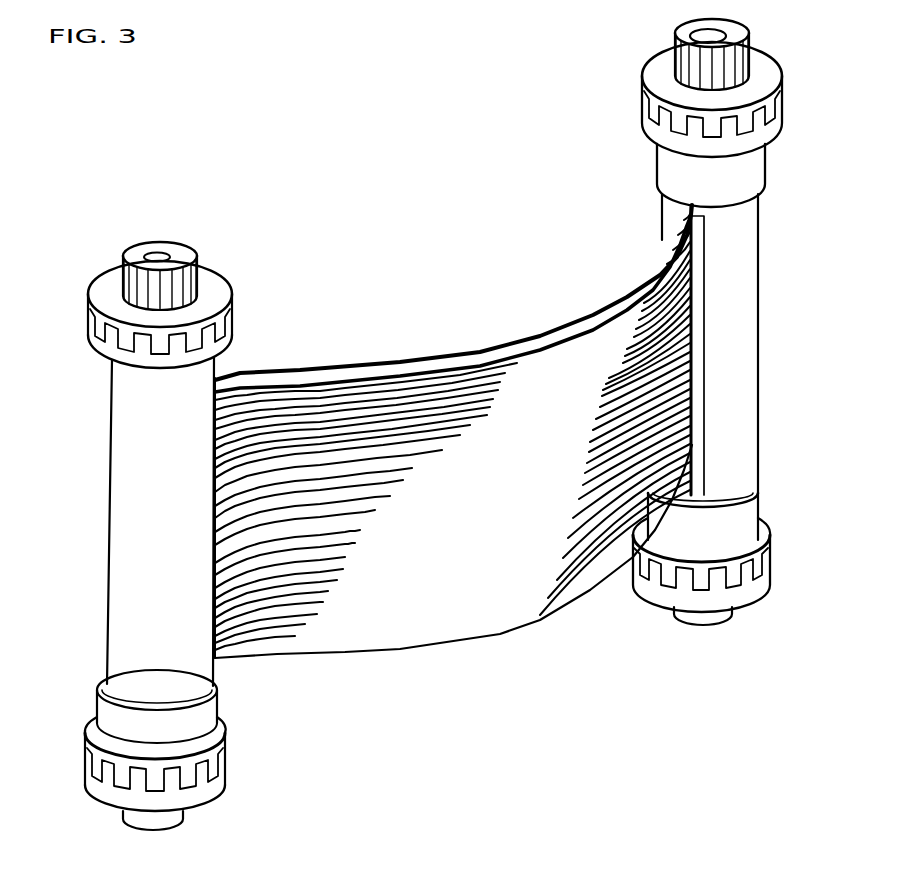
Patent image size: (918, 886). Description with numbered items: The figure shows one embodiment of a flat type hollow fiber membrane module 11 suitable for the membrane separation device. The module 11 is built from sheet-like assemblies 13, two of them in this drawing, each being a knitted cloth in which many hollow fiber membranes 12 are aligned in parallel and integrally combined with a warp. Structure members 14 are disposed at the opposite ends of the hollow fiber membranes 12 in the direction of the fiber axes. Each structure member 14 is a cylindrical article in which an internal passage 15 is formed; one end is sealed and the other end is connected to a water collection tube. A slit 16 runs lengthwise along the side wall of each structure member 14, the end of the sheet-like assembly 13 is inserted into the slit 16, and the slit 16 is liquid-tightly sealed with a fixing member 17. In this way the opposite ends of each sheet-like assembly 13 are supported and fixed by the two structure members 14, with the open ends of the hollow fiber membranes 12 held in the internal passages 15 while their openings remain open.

The flat type hollow fiber membrane module 11 is at (316, 141).
The hollow fiber membrane 12 is at (267, 623).
The sheet-like assembly 13 is at (412, 366).
The structure member 14 is at (160, 498).
The internal passage 15 is at (144, 254).
The slit 16 is at (705, 380).
The fixing member 17 is at (701, 237).